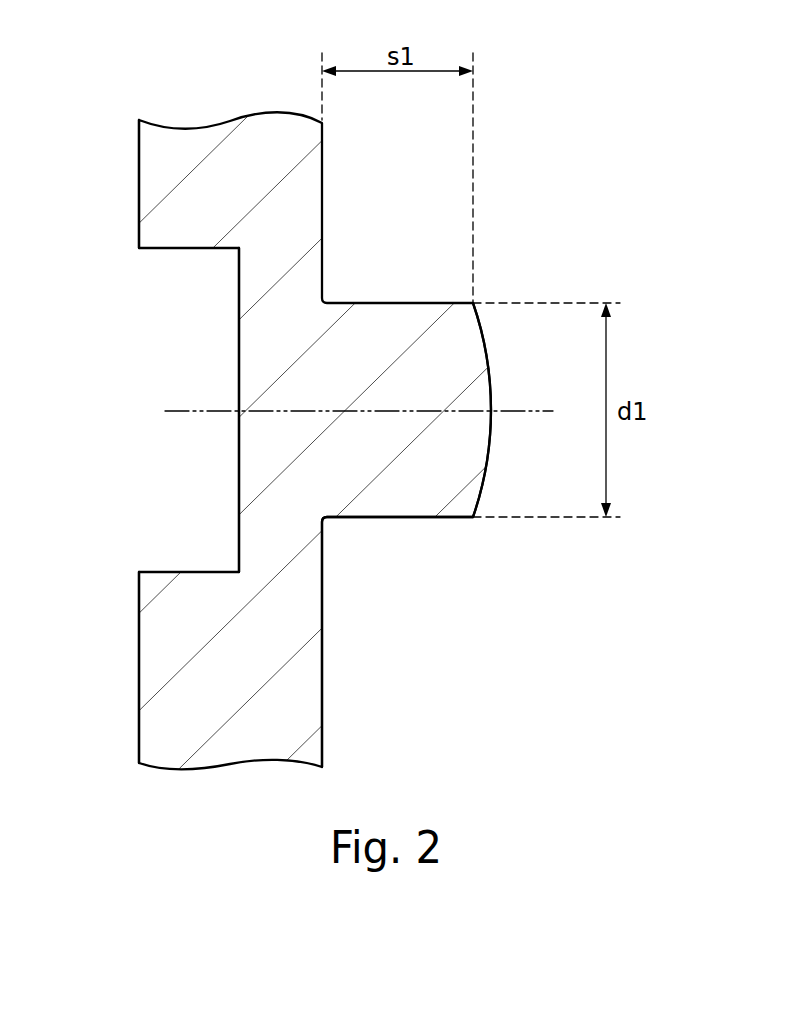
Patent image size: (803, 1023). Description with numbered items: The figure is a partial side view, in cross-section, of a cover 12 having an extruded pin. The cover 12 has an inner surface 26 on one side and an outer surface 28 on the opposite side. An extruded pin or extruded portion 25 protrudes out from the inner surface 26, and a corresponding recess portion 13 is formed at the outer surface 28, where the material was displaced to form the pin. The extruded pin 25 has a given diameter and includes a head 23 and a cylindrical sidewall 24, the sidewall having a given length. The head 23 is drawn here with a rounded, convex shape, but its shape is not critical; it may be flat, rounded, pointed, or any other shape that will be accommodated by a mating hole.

The cover 12 is at (575, 267).
The recess portion 13 is at (239, 377).
The head 23 is at (490, 377).
The cylindrical sidewall 24 is at (387, 517).
The extruded pin 25 is at (443, 445).
The inner surface 26 is at (322, 677).
The outer surface 28 is at (139, 658).